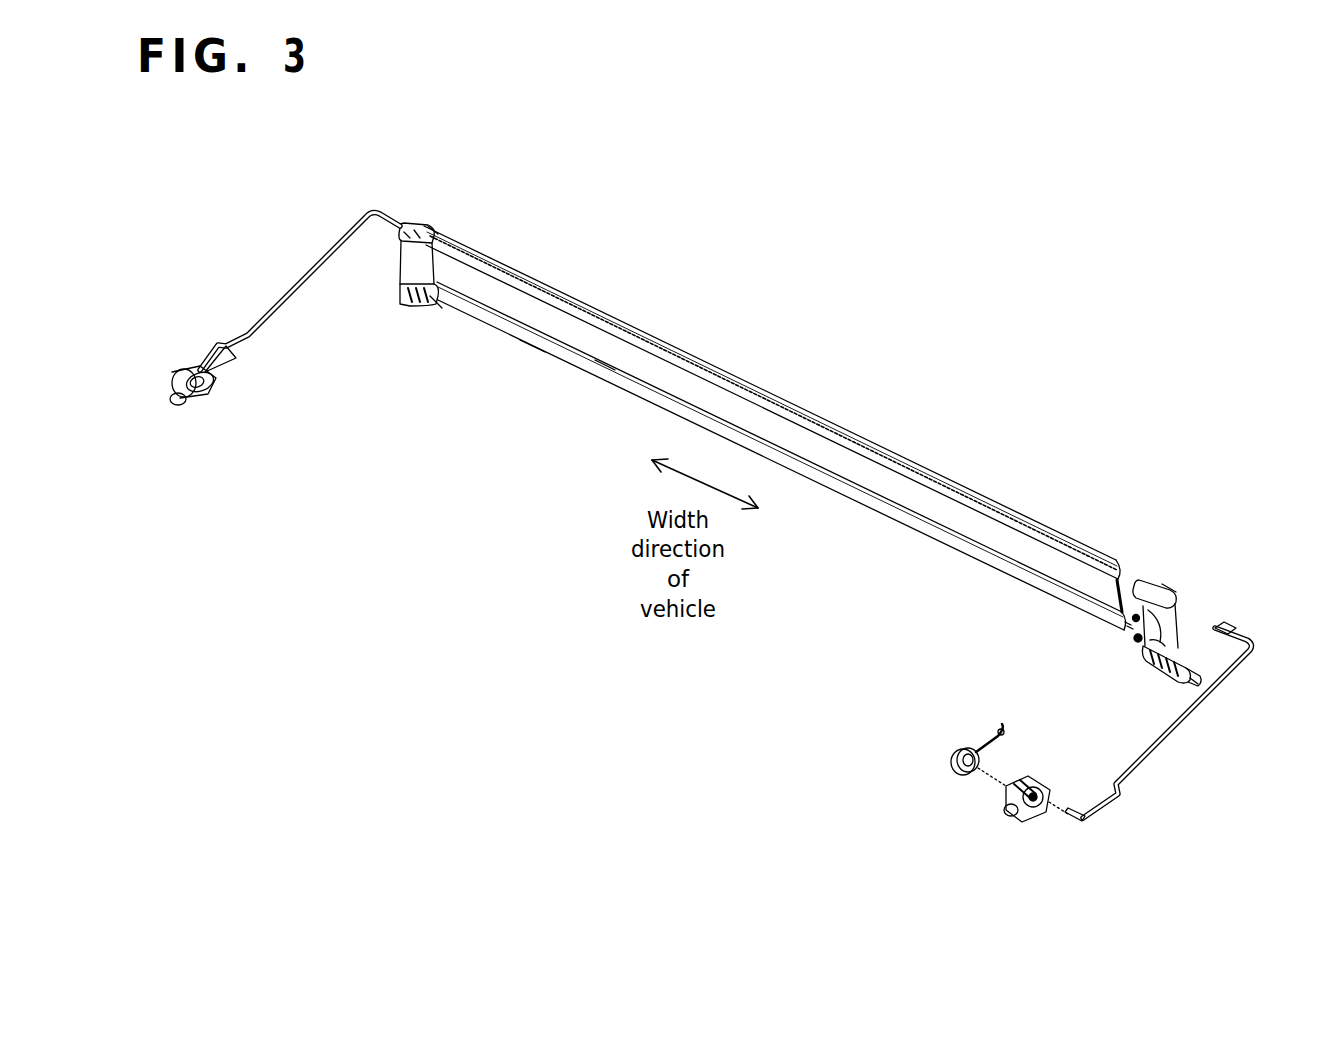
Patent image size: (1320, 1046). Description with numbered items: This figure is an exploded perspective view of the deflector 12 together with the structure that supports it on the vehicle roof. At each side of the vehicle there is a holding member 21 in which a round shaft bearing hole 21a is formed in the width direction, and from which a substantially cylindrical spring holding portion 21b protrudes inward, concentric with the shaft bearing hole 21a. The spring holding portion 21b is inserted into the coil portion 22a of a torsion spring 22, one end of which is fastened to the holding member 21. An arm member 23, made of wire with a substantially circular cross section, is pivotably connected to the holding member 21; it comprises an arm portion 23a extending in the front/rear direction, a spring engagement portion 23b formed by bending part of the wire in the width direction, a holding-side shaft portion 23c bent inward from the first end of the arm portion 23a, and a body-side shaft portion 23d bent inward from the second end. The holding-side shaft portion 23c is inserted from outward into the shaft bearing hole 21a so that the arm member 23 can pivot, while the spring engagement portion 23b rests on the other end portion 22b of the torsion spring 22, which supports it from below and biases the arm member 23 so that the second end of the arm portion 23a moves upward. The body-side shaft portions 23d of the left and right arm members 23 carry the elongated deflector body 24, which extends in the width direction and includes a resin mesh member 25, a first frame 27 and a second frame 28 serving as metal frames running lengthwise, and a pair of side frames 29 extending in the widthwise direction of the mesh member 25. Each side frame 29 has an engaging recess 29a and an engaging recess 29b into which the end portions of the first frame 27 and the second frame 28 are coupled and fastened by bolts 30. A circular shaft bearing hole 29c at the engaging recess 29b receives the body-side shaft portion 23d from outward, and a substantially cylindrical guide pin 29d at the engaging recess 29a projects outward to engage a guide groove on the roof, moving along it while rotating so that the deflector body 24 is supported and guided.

The deflector 12 is at (898, 406).
The holding member 21 is at (170, 382).
The shaft bearing hole 21a is at (1036, 814).
The spring holding portion 21b is at (1005, 790).
The torsion spring 22 is at (186, 404).
The coil portion 22a is at (954, 772).
The other end portion 22b is at (992, 734).
The arm member 23 is at (318, 268).
The arm portion 23a is at (1195, 725).
The spring engagement portion 23b is at (1122, 790).
The holding-side shaft portion 23c is at (1078, 824).
The body-side shaft portion 23d is at (1238, 626).
The deflector body 24 is at (828, 384).
The mesh member 25 is at (606, 344).
The first frame 27 is at (533, 340).
The second frame 28 is at (541, 284).
The side frame 29 is at (396, 297).
The engaging recess 29a is at (441, 310).
The engaging recess 29b is at (434, 229).
The shaft bearing hole 29c is at (1178, 592).
The guide pin 29d is at (1190, 686).
The bolt 30 is at (1165, 645).